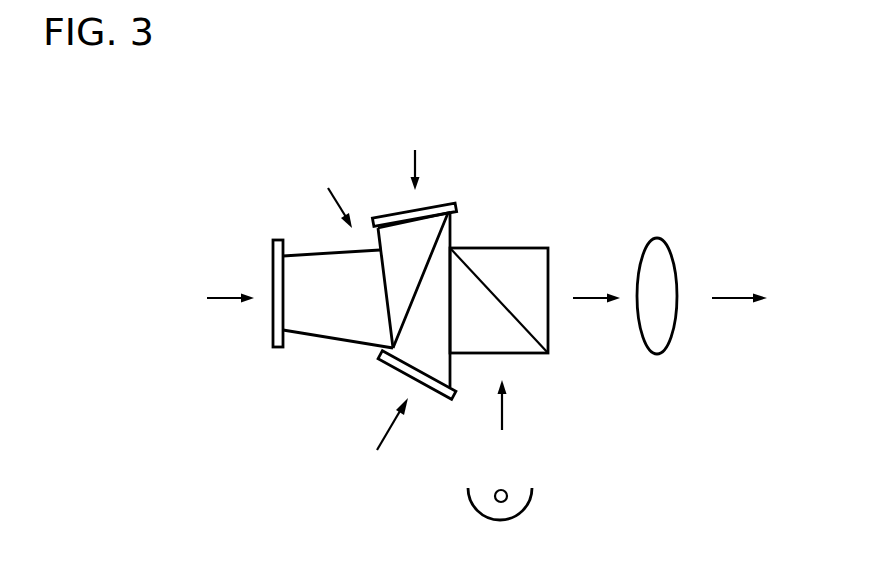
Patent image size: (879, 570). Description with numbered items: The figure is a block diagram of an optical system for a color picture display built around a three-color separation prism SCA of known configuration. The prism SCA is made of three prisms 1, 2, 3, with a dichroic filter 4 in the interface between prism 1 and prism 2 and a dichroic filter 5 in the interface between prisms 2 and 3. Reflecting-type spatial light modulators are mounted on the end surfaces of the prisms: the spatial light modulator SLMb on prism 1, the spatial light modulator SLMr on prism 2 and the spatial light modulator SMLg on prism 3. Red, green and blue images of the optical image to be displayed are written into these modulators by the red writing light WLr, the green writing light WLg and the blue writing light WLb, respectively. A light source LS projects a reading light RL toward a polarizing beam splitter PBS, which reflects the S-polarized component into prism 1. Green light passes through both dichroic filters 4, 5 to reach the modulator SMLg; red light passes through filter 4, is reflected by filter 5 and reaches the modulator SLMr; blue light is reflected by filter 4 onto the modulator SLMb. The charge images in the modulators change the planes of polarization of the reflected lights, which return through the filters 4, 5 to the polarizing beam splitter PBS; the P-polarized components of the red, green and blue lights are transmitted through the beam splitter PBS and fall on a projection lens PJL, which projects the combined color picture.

The prism 1 is at (448, 238).
The prism 2 is at (387, 245).
The prism 3 is at (303, 252).
The dichroic filter 4 is at (395, 347).
The dichroic filter 5 is at (390, 318).
The spatial light modulator for green SMLg is at (276, 240).
The spatial light modulator for red SLMr is at (447, 203).
The spatial light modulator for blue SLMb is at (387, 366).
The polarizing beam splitter PBS is at (518, 255).
The projection lens PJL is at (667, 256).
The light source LS is at (513, 488).
The reading light RL is at (498, 426).
The green writing light WLg is at (196, 298).
The red writing light WLr is at (413, 155).
The blue writing light WLb is at (375, 441).
The three-color separation prism SCA is at (319, 194).